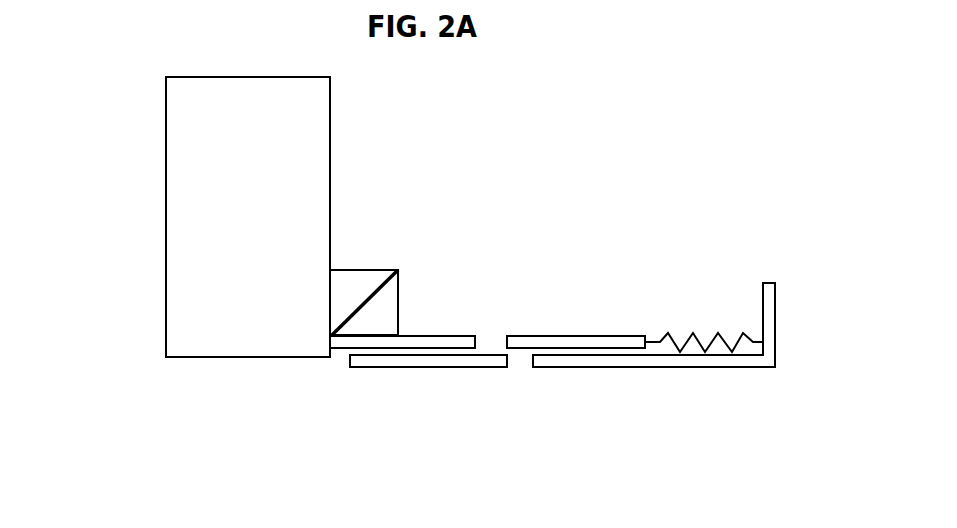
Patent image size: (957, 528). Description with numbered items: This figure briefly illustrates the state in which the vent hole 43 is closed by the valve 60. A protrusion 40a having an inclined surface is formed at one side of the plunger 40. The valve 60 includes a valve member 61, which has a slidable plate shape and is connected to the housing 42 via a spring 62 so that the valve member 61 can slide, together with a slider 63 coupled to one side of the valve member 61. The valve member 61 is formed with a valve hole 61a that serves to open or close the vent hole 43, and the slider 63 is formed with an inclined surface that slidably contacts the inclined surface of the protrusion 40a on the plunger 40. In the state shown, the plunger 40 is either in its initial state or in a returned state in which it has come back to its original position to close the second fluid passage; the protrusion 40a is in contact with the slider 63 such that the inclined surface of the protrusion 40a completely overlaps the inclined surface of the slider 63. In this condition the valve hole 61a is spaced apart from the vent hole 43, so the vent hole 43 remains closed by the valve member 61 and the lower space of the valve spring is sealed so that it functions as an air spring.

The plunger 40 is at (197, 218).
The protrusion 40a is at (360, 285).
The valve 60 is at (625, 327).
The valve member 61 is at (572, 342).
The valve hole 61a is at (480, 343).
The spring 62 is at (695, 334).
The slider 63 is at (378, 322).
The housing 42 is at (723, 358).
The vent hole 43 is at (528, 356).